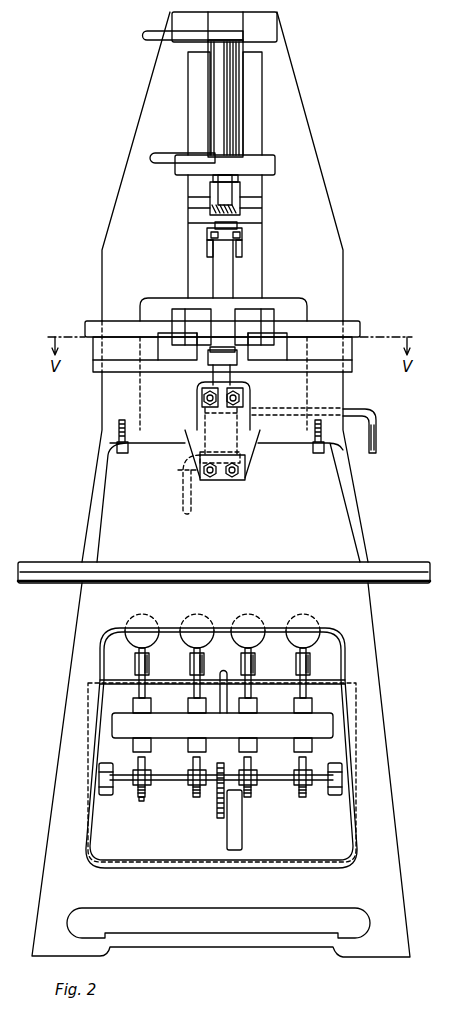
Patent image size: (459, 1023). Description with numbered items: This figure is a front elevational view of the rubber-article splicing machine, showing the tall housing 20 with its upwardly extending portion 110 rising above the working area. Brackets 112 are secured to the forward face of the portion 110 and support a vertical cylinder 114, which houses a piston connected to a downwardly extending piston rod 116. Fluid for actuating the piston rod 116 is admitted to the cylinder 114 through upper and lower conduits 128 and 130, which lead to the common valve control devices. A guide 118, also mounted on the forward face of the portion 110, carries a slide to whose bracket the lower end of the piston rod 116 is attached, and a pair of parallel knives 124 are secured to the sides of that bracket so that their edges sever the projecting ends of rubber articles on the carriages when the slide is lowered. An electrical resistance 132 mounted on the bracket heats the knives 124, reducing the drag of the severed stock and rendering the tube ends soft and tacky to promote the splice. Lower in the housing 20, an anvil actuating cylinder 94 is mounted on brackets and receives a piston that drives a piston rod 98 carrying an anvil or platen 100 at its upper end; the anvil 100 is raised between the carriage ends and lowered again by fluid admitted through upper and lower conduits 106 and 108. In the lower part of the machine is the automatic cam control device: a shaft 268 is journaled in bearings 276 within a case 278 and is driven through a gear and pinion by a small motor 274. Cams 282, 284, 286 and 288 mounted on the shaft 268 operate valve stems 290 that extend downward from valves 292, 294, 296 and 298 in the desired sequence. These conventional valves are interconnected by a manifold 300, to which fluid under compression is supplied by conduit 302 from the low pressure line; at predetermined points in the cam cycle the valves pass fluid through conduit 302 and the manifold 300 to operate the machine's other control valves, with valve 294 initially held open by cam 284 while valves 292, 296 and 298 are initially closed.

The housing 20 is at (380, 760).
The anvil actuating cylinder 94 is at (248, 443).
The piston rod 98 is at (230, 379).
The anvil 100 is at (212, 362).
The upper conduit 106 is at (352, 409).
The lower conduit 108 is at (194, 492).
The upwardly extending portion 110 is at (280, 55).
The brackets 112 is at (270, 26).
The vertical cylinder 114 is at (242, 112).
The piston rod 116 is at (240, 188).
The guide 118 is at (256, 262).
The knives 124 is at (244, 244).
The upper conduit 128 is at (155, 32).
The lower conduit 130 is at (158, 165).
The electrical resistance 132 is at (210, 235).
The shaft 268 is at (176, 780).
The motor 274 is at (242, 836).
The bearings 276 is at (106, 795).
The case 278 is at (345, 838).
The cam 282 is at (303, 792).
The cam 284 is at (249, 797).
The cam 286 is at (198, 797).
The cam 288 is at (142, 797).
The valve stems 290 is at (146, 755).
The valve 292 is at (308, 704).
The valve 294 is at (257, 705).
The valve 296 is at (192, 704).
The valve 298 is at (138, 704).
The manifold 300 is at (327, 723).
The conduit 302 is at (222, 682).